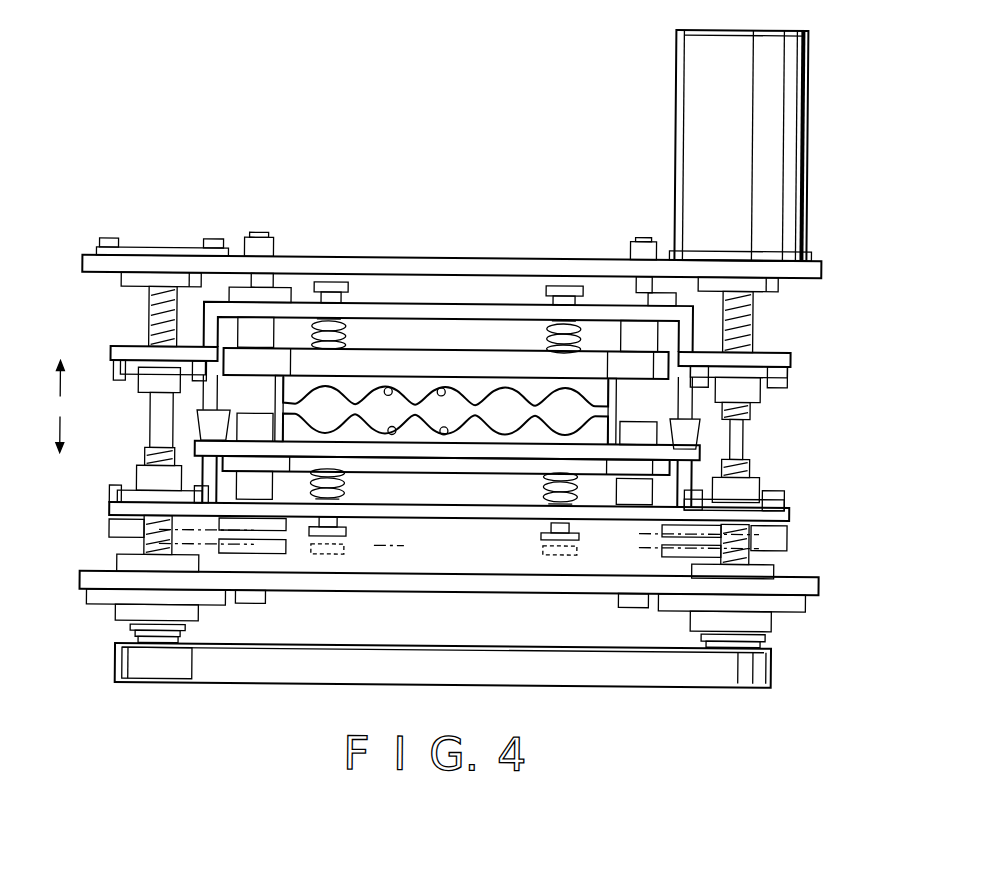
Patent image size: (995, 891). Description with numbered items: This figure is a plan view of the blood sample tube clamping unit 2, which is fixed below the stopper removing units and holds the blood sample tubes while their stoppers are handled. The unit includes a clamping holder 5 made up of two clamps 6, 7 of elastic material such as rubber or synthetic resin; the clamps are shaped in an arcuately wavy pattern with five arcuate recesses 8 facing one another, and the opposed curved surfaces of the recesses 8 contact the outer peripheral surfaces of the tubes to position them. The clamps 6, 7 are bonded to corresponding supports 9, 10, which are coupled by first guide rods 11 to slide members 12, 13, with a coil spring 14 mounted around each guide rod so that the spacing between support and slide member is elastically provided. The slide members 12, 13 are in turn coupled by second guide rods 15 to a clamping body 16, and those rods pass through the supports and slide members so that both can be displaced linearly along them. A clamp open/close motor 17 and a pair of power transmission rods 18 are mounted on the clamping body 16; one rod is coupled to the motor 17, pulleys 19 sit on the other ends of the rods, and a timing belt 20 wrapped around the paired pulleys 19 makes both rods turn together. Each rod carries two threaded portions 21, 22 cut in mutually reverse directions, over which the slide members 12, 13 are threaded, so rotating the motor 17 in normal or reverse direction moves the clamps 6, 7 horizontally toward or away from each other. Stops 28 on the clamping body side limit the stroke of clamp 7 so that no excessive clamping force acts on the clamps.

The blood sample tube clamping unit 2 is at (207, 222).
The clamping holder 5 is at (616, 413).
The clamp 6 is at (484, 392).
The clamp 7 is at (478, 434).
The recess 8 is at (440, 389).
The support 9 is at (376, 350).
The support 10 is at (372, 474).
The first guide rod 11 is at (334, 283).
The slide member 12 is at (790, 361).
The slide member 13 is at (790, 511).
The coil spring 14 is at (314, 321).
The second guide rod 15 is at (254, 605).
The clamping body 16 is at (825, 268).
The clamp open/close motor 17 is at (804, 162).
The power transmission rod 18 is at (147, 551).
The pulley 19 is at (135, 685).
The timing belt 20 is at (135, 663).
The threaded portion 21 is at (150, 325).
The threaded portion 22 is at (145, 524).
The stop 28 is at (205, 441).